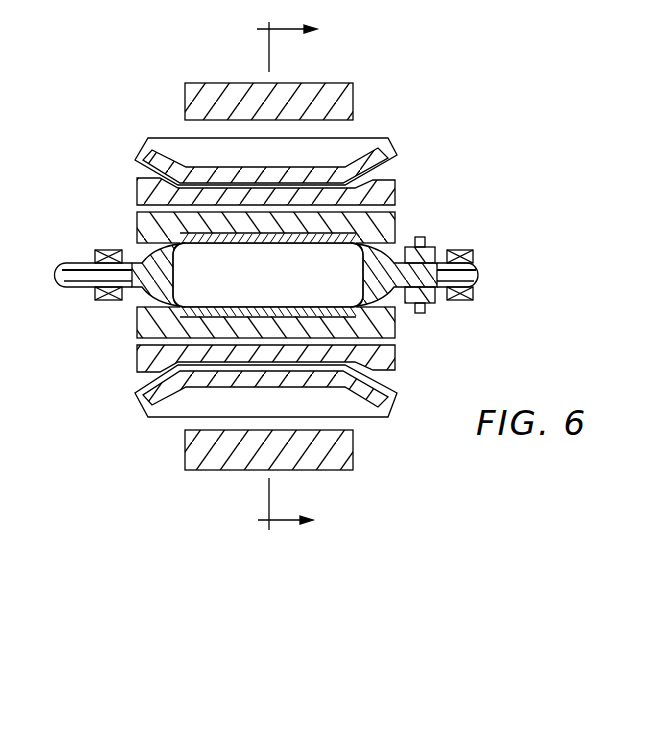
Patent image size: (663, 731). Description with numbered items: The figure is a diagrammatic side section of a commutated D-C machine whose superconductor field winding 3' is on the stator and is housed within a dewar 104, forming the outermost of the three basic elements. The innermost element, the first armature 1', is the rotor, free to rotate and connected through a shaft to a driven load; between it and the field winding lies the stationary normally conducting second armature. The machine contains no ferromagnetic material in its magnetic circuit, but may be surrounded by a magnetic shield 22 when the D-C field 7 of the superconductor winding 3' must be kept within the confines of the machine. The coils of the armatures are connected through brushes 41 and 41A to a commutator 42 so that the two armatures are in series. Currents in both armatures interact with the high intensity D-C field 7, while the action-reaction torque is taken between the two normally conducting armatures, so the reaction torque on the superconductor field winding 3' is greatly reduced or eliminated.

The magnetic shield 22 is at (335, 82).
The dewar 104 is at (373, 138).
The superconductor field winding 3' is at (262, 257).
The first armature 1' is at (285, 263).
The brush 41 is at (422, 237).
The brush 41A is at (422, 313).
The commutator 42 is at (435, 252).
The high intensity D-C field 7 is at (286, 275).